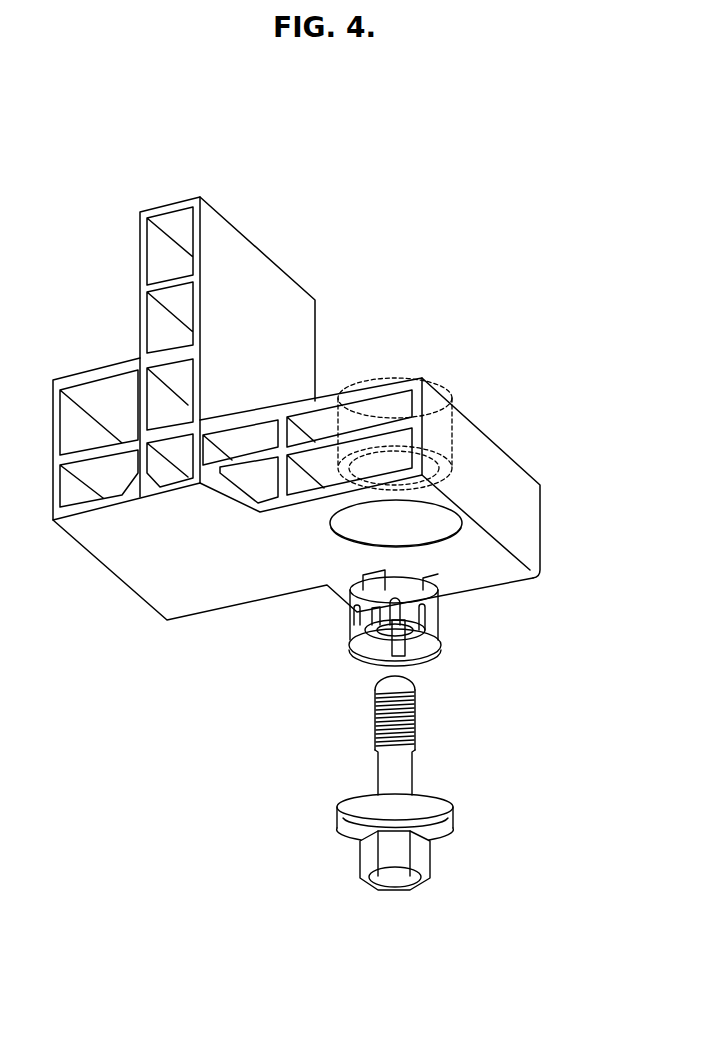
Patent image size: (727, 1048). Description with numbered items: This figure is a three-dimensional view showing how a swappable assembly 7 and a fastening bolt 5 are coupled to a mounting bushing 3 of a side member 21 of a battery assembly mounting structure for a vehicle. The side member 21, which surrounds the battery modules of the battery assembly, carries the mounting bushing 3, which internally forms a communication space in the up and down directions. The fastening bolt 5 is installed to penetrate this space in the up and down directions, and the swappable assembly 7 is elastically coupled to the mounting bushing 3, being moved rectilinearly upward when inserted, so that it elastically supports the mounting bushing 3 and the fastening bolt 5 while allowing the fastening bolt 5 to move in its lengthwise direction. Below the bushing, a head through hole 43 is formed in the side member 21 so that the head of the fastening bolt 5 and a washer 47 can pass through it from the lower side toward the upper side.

The side member 21 is at (237, 242).
The mounting bushing 3 is at (373, 387).
The head through hole 43 is at (437, 543).
The swappable assembly 7 is at (458, 626).
The fastening bolt 5 is at (403, 770).
The washer 47 is at (453, 813).